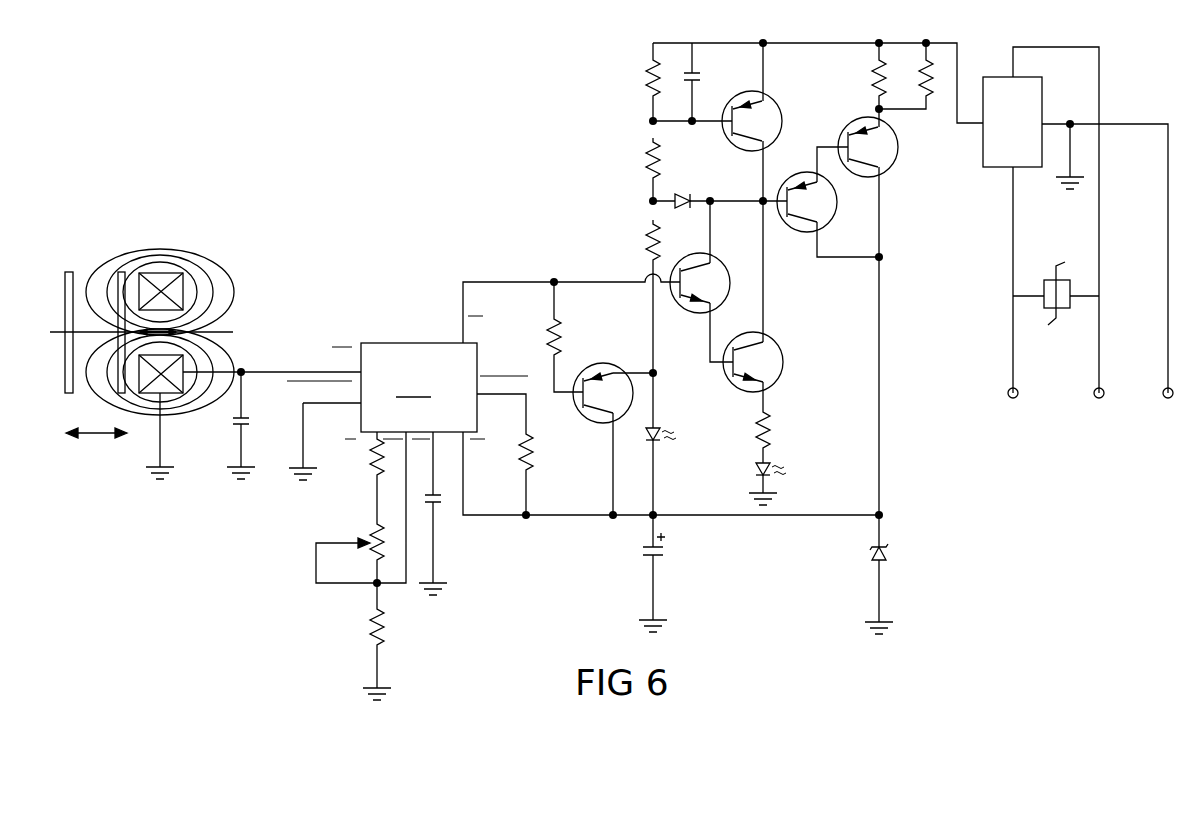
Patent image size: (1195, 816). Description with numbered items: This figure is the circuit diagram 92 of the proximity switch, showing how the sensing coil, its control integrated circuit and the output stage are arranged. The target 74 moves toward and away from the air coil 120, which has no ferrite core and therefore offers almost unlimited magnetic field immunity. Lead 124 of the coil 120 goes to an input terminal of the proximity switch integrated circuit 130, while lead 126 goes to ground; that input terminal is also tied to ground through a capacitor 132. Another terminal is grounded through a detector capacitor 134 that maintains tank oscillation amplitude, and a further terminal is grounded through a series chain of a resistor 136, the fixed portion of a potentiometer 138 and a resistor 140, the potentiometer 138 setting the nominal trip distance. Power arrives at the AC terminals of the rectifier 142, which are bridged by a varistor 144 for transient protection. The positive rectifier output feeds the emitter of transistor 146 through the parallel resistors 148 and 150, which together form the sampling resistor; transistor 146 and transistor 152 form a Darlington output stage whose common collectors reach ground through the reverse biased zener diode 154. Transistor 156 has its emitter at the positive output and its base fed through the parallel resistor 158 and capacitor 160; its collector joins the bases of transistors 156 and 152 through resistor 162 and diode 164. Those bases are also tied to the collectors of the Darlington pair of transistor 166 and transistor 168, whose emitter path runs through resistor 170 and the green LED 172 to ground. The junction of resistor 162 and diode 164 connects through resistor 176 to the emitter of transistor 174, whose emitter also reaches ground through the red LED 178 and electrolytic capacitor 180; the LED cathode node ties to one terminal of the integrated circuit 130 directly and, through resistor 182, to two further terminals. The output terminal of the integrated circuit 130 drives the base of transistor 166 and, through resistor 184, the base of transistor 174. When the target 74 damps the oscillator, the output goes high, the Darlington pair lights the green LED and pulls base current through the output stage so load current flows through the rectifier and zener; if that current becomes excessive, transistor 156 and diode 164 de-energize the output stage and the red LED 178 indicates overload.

The target 74 is at (68, 292).
The circuit diagram 92 is at (487, 193).
The coil 120 is at (158, 280).
The lead 124 is at (217, 352).
The lead 126 is at (163, 435).
The proximity switch integrated circuit 130 is at (560, 434).
The capacitor 132 is at (255, 420).
The detector capacitor 134 is at (441, 497).
The resistor 136 is at (376, 465).
The potentiometer 138 is at (362, 543).
The resistor 140 is at (384, 615).
The rectifier 142 is at (1043, 117).
The varistor 144 is at (1045, 284).
The transistor 146 is at (895, 163).
The resistor 148 is at (873, 85).
The resistor 150 is at (932, 82).
The transistor 152 is at (838, 205).
The zener diode 154 is at (890, 553).
The transistor 156 is at (778, 135).
The resistor 158 is at (647, 88).
The capacitor 160 is at (700, 76).
The resistor 162 is at (648, 162).
The diode 164 is at (684, 196).
The transistor 166 is at (726, 270).
The transistor 168 is at (782, 348).
The resistor 170 is at (772, 428).
The green LED 172 is at (756, 468).
The transistor 174 is at (600, 365).
The resistor 176 is at (648, 242).
The red LED 178 is at (662, 432).
The electrolytic capacitor 180 is at (665, 552).
The resistor 182 is at (536, 448).
The resistor 184 is at (548, 325).